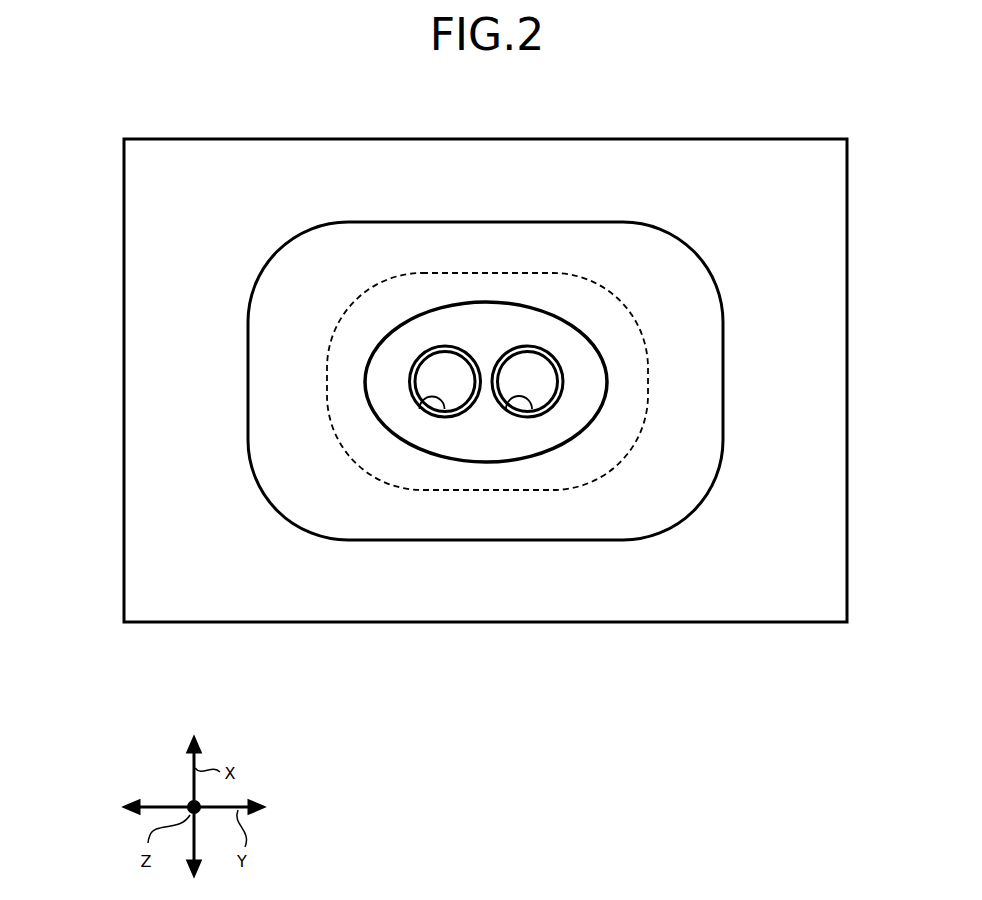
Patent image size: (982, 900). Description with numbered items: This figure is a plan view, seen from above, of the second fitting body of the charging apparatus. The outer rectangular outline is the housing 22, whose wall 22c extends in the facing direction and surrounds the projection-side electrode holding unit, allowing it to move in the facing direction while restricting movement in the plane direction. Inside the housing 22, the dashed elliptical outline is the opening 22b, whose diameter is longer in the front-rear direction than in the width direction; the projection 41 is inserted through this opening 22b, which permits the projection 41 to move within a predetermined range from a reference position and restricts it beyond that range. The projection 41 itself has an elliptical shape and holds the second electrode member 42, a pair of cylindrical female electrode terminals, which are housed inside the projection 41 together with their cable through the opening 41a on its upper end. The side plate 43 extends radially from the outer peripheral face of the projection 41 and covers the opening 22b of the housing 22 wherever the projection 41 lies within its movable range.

The housing 22 is at (820, 153).
The opening 22b is at (580, 483).
The wall 22c is at (647, 139).
The projection 41 is at (408, 315).
The opening 41a is at (420, 409).
The second electrode member 42 is at (530, 347).
The side plate 43 is at (547, 310).